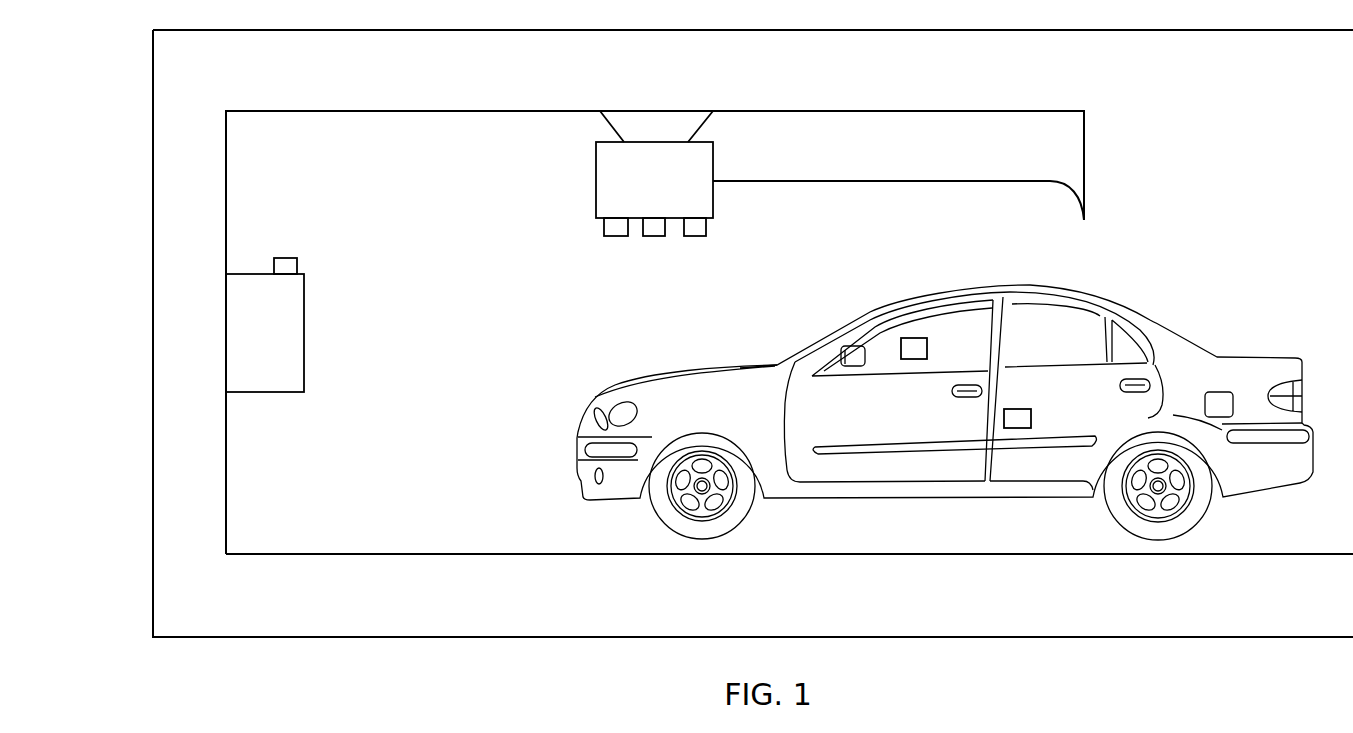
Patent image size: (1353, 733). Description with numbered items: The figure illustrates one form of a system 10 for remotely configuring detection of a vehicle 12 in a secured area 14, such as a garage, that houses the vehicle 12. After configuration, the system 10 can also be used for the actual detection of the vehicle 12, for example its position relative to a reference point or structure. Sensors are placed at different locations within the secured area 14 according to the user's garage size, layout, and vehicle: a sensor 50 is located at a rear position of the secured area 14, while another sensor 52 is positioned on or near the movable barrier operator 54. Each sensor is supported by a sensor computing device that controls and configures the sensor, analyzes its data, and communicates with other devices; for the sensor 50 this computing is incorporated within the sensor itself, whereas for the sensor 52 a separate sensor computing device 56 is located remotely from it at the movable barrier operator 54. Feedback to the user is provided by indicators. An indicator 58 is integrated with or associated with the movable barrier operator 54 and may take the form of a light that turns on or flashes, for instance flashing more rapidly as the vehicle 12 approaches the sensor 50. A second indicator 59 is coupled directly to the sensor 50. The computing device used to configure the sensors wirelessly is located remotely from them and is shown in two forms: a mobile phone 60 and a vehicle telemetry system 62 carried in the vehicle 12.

The system 10 is at (416, 121).
The vehicle 12 is at (1155, 327).
The secured area 14 is at (377, 551).
The sensor 50 is at (304, 333).
The sensor 52 is at (654, 237).
The movable barrier operator 54 is at (596, 181).
The sensor computing device 56 is at (616, 237).
The indicator 58 is at (695, 237).
The indicator 59 is at (284, 258).
The mobile phone 60 is at (1018, 428).
The vehicle telemetry system 62 is at (913, 338).